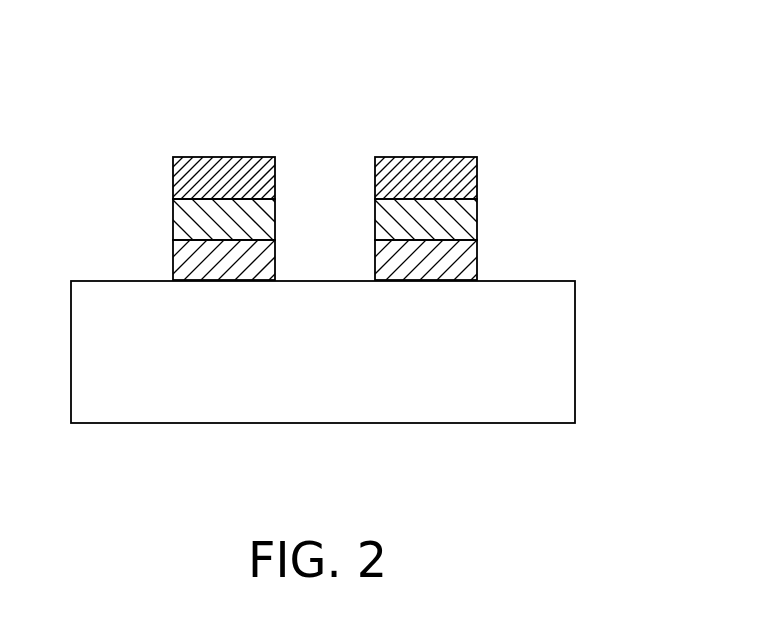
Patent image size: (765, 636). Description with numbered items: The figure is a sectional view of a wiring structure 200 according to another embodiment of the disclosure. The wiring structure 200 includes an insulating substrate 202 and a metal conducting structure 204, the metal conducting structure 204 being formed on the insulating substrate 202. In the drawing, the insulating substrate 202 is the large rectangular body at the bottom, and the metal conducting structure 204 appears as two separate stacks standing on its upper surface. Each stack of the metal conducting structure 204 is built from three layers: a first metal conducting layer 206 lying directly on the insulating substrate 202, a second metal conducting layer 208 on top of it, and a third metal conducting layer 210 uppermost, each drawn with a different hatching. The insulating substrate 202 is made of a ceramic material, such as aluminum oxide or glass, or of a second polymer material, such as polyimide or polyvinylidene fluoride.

The wiring structure 200 is at (187, 84).
The insulating substrate 202 is at (364, 372).
The metal conducting structure 204 is at (375, 211).
The first metal conducting layer 206 is at (478, 257).
The second metal conducting layer 208 is at (478, 218).
The third metal conducting layer 210 is at (478, 174).